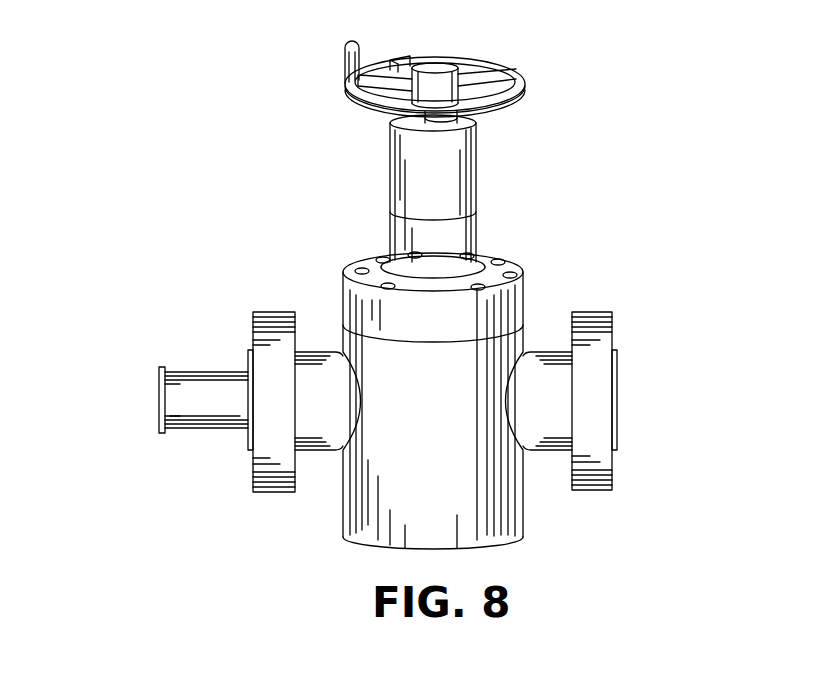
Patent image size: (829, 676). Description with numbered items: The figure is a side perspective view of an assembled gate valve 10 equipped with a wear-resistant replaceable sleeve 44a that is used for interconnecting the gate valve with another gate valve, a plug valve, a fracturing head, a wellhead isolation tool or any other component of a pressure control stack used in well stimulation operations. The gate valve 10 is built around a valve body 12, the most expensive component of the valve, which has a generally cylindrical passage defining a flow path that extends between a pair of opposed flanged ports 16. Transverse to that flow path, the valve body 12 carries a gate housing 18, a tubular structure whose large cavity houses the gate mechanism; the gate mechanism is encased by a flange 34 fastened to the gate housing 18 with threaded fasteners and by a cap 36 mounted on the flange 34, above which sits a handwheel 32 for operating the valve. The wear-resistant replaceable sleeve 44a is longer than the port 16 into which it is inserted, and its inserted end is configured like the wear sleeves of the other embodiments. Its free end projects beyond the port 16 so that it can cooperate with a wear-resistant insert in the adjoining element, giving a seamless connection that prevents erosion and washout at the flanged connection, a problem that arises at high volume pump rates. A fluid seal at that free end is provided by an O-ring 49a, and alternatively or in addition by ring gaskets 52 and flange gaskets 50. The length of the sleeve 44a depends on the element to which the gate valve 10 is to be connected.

The gate valve 10 is at (236, 112).
The valve body 12 is at (300, 561).
The flanged port 16 is at (270, 312).
The gate housing 18 is at (467, 527).
The handwheel 32 is at (523, 80).
The flange 34 is at (500, 298).
The cap 36 is at (450, 172).
The wear-resistant replaceable sleeve 44a is at (200, 390).
The O-ring 49a is at (163, 430).
The flange gasket 50 is at (247, 437).
The ring gasket 52 is at (158, 387).